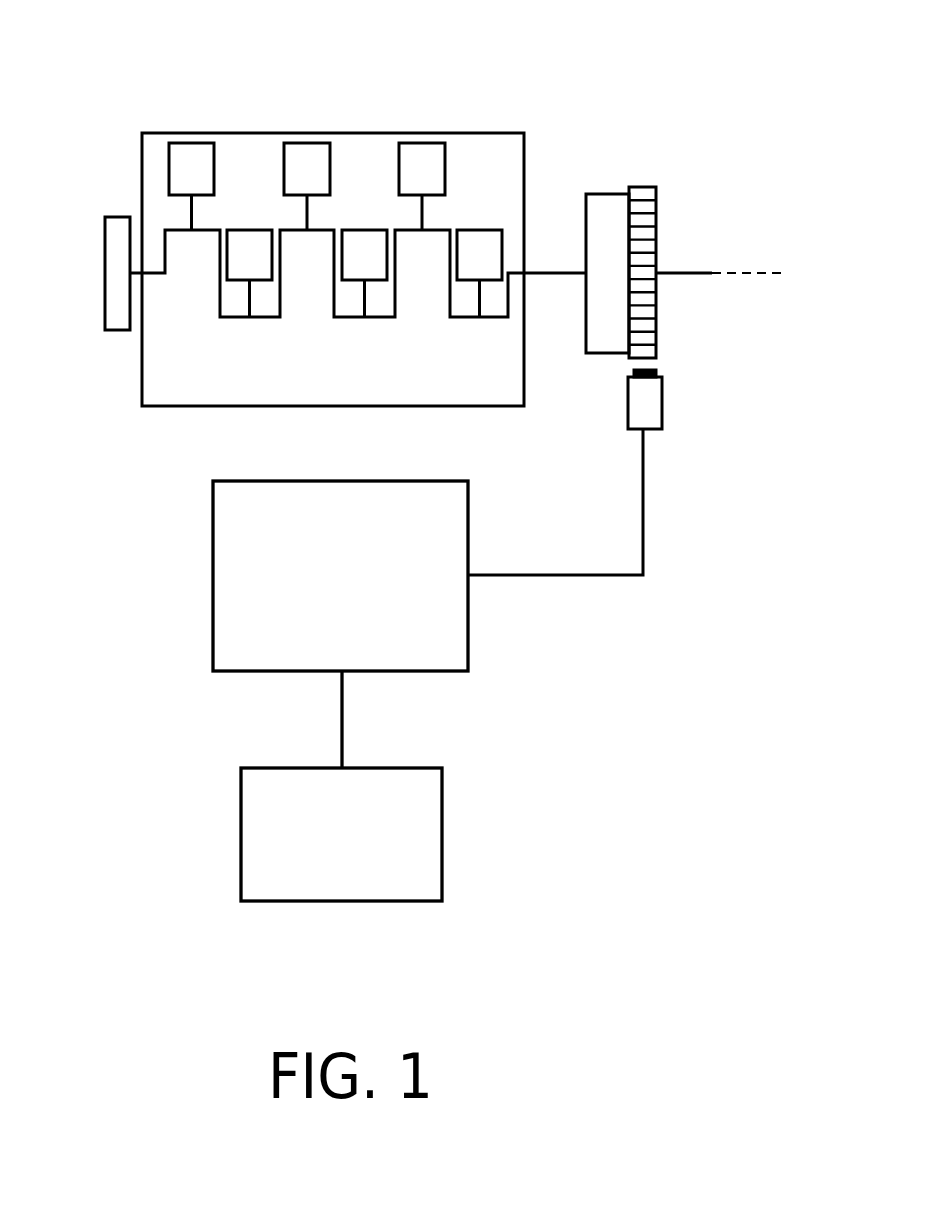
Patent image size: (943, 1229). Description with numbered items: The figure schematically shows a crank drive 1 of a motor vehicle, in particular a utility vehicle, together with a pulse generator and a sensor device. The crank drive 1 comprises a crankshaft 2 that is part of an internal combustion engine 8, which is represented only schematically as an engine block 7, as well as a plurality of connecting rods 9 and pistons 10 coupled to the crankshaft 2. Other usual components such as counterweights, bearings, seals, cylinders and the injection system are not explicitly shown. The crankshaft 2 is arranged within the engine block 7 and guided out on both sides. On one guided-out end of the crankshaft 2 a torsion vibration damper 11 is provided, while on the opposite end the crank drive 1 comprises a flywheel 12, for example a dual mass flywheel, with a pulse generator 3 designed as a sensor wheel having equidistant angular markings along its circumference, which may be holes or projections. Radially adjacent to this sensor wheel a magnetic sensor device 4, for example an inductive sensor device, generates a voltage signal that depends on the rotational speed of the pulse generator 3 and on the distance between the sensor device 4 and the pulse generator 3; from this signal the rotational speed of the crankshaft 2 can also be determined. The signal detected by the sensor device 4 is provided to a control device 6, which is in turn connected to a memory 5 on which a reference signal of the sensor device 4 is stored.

The crank drive 1 is at (324, 228).
The crankshaft 2 is at (557, 273).
The pulse generator 3 is at (640, 233).
The magnetic sensor device 4 is at (645, 402).
The memory 5 is at (424, 795).
The control device 6 is at (448, 518).
The engine block 7 is at (245, 133).
The internal combustion engine 8 is at (160, 378).
The connecting rods 9 is at (250, 305).
The pistons 10 is at (422, 162).
The torsion vibration damper 11 is at (115, 227).
The flywheel 12 is at (608, 213).